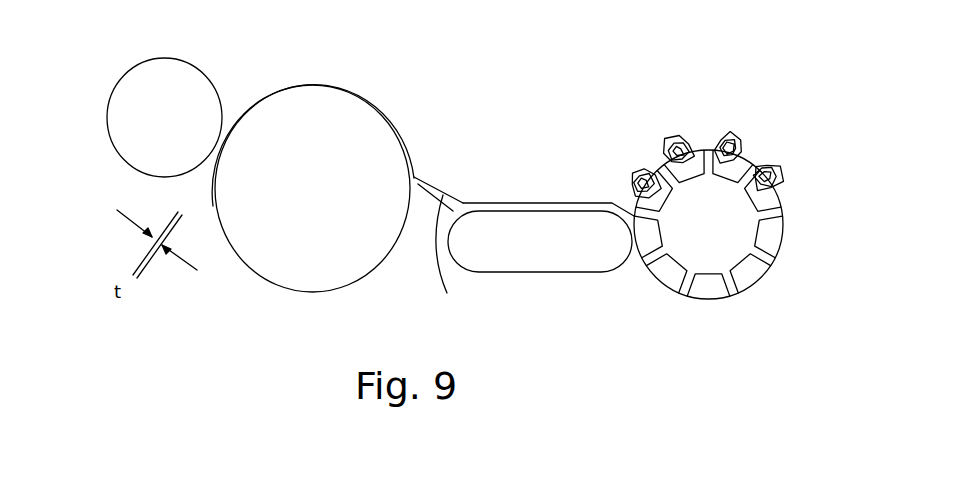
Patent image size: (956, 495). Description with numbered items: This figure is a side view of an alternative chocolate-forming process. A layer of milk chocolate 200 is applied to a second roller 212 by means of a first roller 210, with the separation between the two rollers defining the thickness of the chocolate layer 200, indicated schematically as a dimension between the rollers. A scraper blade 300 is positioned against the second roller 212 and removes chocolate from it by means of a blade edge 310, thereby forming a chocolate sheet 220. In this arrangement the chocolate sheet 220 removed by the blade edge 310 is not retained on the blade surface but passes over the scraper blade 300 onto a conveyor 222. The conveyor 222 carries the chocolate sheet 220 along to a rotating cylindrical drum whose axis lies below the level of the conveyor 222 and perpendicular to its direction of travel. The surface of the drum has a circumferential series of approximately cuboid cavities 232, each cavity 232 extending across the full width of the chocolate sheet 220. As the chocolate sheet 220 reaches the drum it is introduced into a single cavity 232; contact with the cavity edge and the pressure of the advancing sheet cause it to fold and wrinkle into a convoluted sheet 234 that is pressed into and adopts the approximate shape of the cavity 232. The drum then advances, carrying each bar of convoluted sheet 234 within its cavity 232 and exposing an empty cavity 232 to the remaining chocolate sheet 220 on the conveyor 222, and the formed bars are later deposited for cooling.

The layer of milk chocolate 200 is at (333, 85).
The first roller 210 is at (183, 135).
The second roller 212 is at (340, 210).
The chocolate sheet 220 is at (443, 195).
The conveyor 222 is at (563, 250).
The cavity 232 is at (755, 270).
The convoluted sheet 234 is at (730, 85).
The scraper blade 300 is at (462, 258).
The blade edge 310 is at (413, 180).